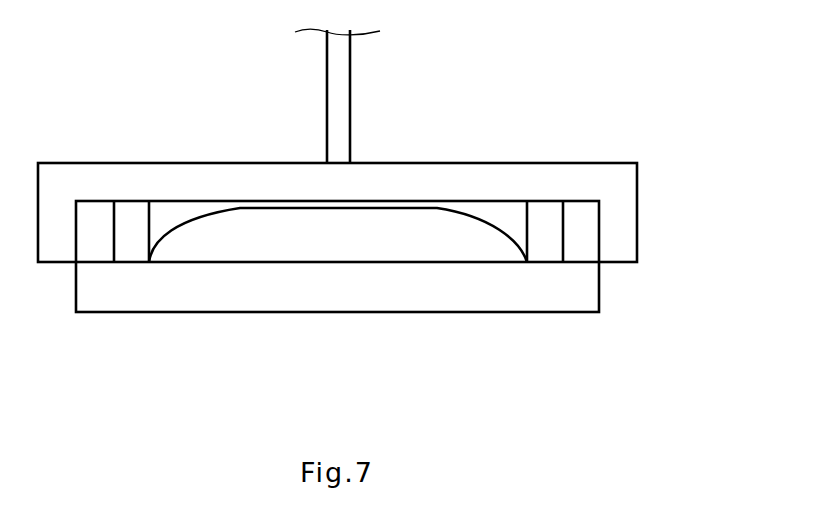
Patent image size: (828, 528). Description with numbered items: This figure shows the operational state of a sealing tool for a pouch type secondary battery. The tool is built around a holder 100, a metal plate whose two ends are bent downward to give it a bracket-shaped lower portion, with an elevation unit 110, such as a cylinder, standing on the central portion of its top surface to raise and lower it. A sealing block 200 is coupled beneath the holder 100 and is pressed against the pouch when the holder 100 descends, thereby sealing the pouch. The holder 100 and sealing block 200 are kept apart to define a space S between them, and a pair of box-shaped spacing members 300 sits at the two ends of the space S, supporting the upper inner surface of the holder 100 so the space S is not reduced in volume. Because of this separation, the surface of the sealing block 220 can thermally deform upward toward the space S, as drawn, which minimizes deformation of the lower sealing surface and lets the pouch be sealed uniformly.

The holder 100 is at (574, 176).
The elevation unit 110 is at (339, 78).
The sealing block 200 is at (587, 291).
The surface of the sealing block 220 is at (448, 224).
The spacing member 300 is at (550, 230).
The space S is at (172, 212).